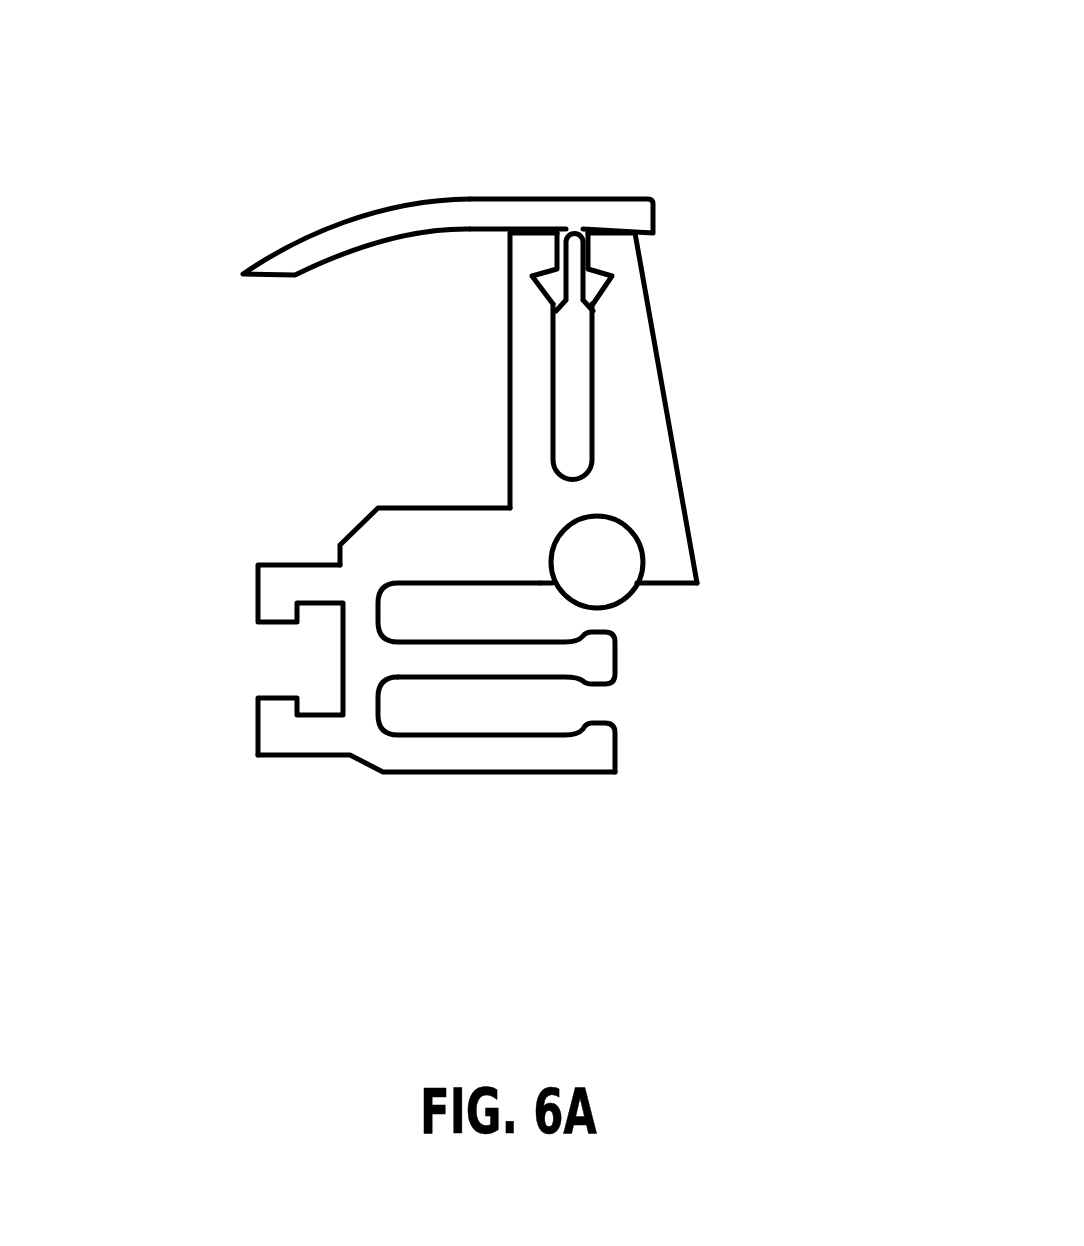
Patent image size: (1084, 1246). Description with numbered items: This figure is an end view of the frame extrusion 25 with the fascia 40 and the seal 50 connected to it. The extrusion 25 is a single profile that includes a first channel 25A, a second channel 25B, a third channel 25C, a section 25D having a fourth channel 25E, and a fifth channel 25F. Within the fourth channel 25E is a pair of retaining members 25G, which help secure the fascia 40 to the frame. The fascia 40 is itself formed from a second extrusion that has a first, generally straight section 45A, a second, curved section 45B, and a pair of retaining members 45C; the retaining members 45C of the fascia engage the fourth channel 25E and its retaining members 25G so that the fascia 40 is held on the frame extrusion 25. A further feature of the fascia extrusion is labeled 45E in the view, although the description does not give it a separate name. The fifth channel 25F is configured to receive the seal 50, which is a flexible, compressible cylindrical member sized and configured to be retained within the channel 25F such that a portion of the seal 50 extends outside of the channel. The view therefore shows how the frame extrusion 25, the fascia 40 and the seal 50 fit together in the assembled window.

The extrusion 25 is at (505, 466).
The first channel 25A is at (258, 684).
The second channel 25B is at (578, 718).
The third channel 25C is at (574, 633).
The section 25D is at (530, 400).
The fourth channel 25E is at (591, 397).
The fifth channel 25F is at (637, 606).
The retaining members 25G is at (548, 270).
The fascia 40 is at (496, 198).
The first, generally straight section 45A is at (632, 210).
The second, curved section 45B is at (280, 267).
The retaining members 45C is at (557, 294).
The clip barb 45E is at (596, 297).
The seal 50 is at (607, 555).